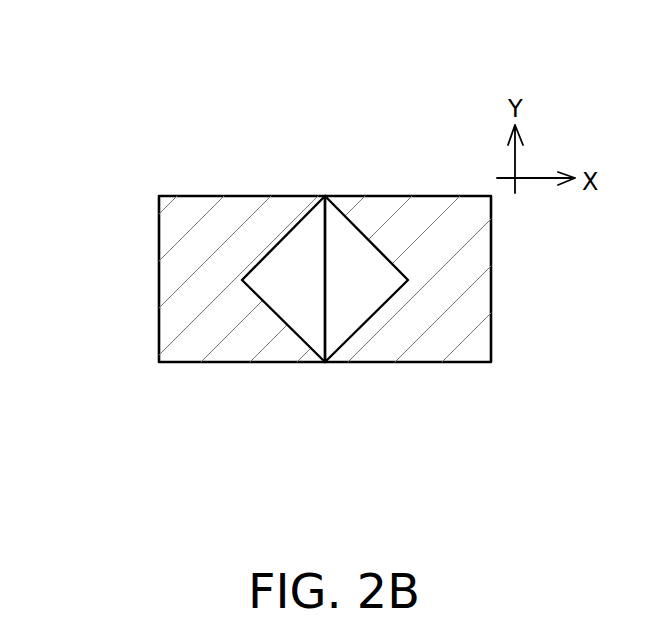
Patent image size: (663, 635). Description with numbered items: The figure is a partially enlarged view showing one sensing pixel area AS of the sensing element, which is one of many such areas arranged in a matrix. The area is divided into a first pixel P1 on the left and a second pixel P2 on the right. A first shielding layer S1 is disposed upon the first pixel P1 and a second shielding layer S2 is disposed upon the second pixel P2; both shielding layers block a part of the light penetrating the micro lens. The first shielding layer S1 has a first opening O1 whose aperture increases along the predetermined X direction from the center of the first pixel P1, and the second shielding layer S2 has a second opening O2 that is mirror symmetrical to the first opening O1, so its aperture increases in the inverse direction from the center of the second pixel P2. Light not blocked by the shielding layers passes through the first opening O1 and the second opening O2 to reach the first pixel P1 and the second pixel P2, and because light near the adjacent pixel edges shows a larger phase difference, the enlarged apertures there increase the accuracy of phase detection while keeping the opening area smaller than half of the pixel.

The sensing pixel area AS is at (180, 112).
The first pixel P1 is at (158, 272).
The second pixel P2 is at (492, 307).
The first shielding layer S1 is at (202, 323).
The second shielding layer S2 is at (454, 321).
The first opening O1 is at (297, 285).
The second opening O2 is at (362, 278).